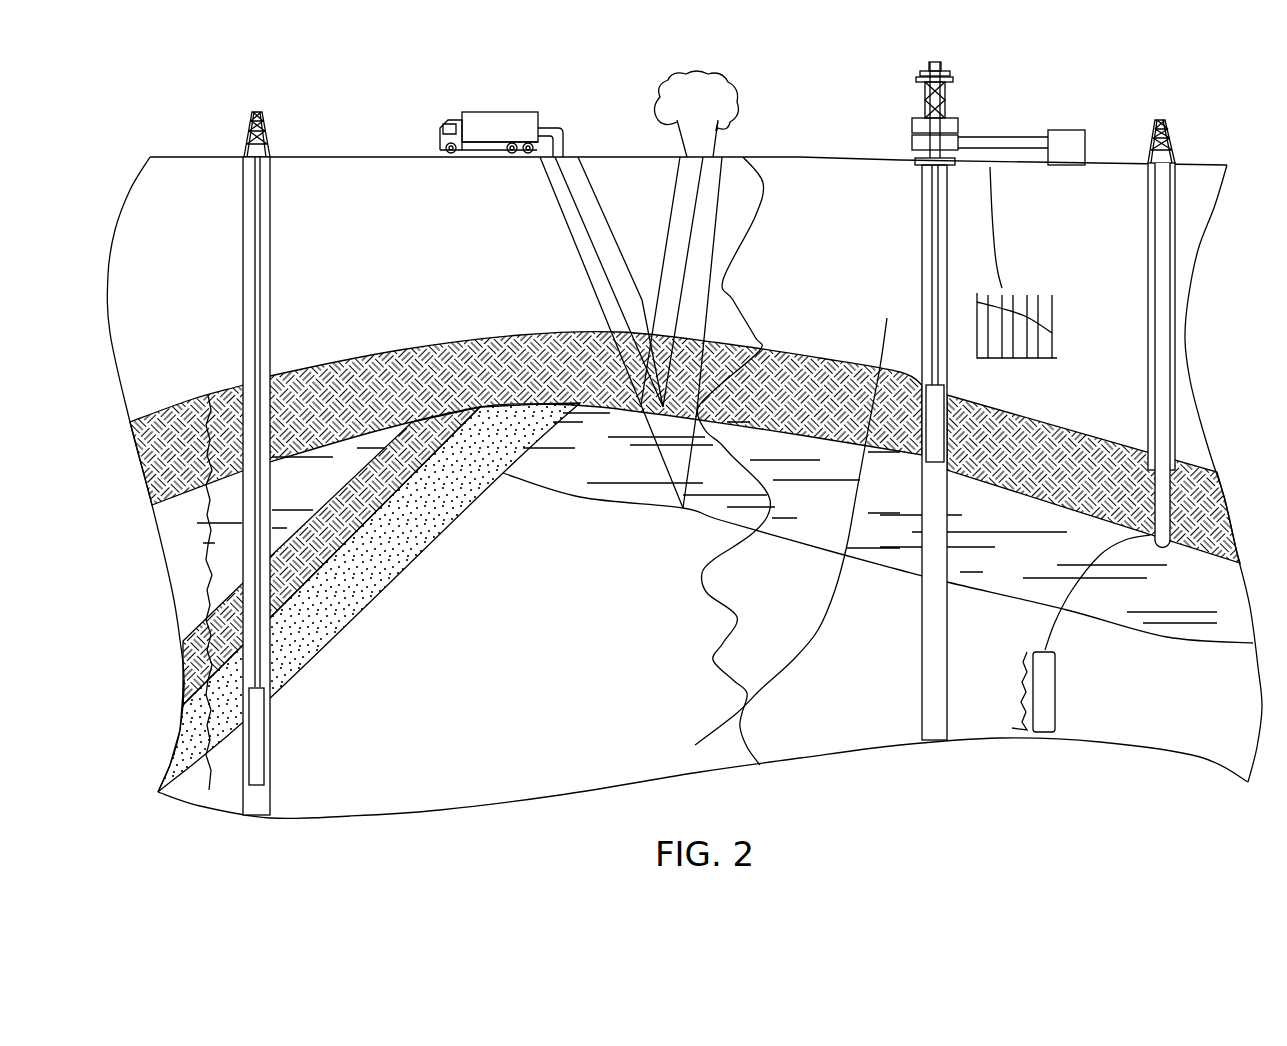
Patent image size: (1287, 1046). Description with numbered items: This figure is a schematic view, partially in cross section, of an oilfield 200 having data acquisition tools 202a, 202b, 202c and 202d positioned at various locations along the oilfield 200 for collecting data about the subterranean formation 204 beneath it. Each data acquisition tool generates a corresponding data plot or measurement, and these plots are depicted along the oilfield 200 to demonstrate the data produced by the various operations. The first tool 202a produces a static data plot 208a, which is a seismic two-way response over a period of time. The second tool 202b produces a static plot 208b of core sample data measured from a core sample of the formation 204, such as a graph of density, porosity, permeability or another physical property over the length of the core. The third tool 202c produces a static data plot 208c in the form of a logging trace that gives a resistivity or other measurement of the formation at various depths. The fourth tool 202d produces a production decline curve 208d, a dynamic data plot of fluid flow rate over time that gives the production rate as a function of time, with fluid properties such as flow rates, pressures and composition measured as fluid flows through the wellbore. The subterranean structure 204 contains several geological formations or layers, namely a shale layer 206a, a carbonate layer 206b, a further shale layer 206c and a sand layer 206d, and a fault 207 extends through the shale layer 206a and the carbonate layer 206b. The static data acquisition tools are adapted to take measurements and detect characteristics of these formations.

The oilfield 200 is at (1113, 134).
The data acquisition tool 202a is at (466, 111).
The data acquisition tool 202b is at (1180, 549).
The data acquisition tool 202c is at (268, 743).
The data acquisition tool 202d is at (915, 450).
The subterranean formation 204 is at (557, 586).
The shale layer 206a is at (489, 388).
The carbonate layer 206b is at (314, 491).
The shale layer 206c is at (378, 512).
The sand layer 206d is at (438, 527).
The fault 207 is at (884, 333).
The static data plot 208a is at (726, 622).
The static plot 208b is at (1022, 668).
The static data plot 208c is at (210, 535).
The production decline curve 208d is at (1013, 360).